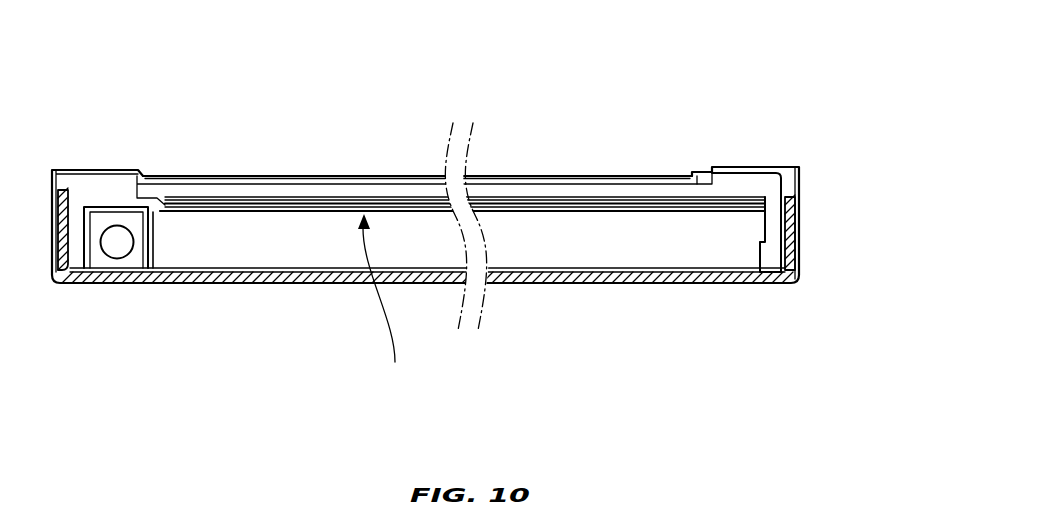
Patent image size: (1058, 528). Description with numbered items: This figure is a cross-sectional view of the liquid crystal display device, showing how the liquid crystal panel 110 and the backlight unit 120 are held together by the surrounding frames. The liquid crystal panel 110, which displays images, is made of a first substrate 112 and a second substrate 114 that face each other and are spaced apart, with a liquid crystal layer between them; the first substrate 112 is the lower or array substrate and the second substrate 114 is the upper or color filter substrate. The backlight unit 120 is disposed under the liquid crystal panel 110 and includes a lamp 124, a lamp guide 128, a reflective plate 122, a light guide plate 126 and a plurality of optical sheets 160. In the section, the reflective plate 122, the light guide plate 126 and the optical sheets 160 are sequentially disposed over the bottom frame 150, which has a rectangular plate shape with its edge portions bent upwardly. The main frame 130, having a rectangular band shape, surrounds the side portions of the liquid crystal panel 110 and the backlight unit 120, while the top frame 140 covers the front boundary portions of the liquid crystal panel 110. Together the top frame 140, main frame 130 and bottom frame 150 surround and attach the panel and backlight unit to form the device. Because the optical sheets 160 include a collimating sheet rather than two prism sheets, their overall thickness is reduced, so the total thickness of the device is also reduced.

The liquid crystal panel 110 is at (451, 133).
The first substrate 112 is at (598, 184).
The second substrate 114 is at (555, 176).
The backlight unit 120 is at (425, 309).
The reflective plate 122 is at (213, 287).
The lamp 124 is at (117, 242).
The light guide plate 126 is at (456, 309).
The lamp guide 128 is at (85, 287).
The main frame 130 is at (780, 230).
The top frame 140 is at (758, 168).
The bottom frame 150 is at (707, 277).
The plurality of optical sheets 160 is at (385, 298).